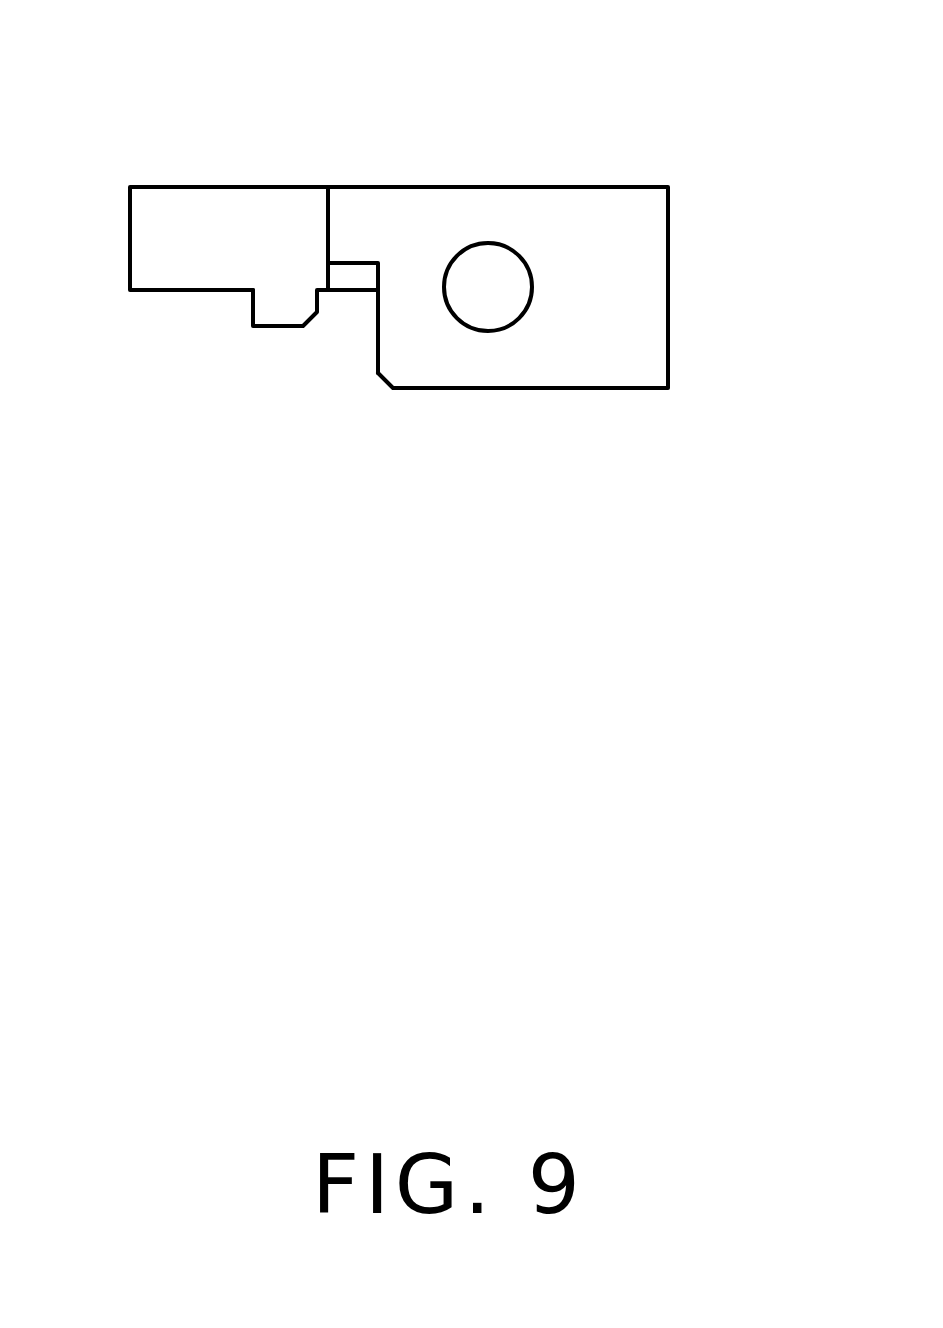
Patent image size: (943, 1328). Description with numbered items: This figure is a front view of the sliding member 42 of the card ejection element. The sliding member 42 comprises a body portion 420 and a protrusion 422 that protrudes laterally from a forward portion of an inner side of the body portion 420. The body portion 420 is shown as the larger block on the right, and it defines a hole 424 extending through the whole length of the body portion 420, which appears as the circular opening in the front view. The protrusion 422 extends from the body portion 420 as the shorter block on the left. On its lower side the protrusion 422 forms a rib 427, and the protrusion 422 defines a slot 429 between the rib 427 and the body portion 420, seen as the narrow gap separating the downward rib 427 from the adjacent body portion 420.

The sliding member 42 is at (448, 261).
The body portion 420 is at (579, 223).
The protrusion 422 is at (180, 240).
The hole 424 is at (483, 282).
The rib 427 is at (278, 310).
The slot 429 is at (360, 300).